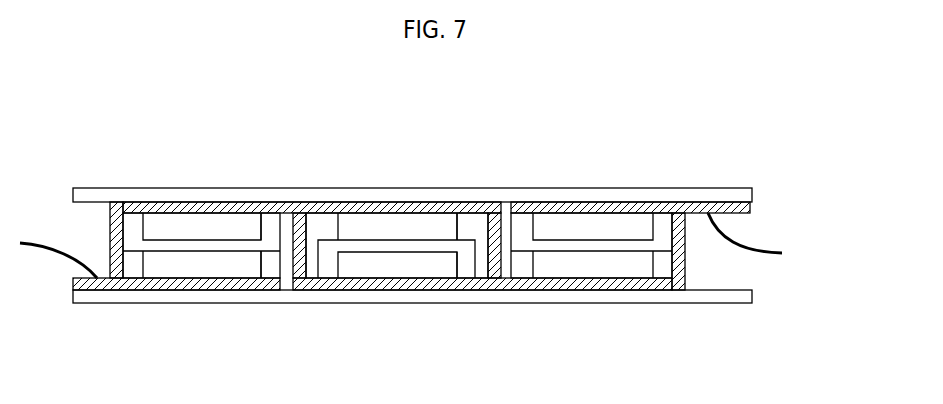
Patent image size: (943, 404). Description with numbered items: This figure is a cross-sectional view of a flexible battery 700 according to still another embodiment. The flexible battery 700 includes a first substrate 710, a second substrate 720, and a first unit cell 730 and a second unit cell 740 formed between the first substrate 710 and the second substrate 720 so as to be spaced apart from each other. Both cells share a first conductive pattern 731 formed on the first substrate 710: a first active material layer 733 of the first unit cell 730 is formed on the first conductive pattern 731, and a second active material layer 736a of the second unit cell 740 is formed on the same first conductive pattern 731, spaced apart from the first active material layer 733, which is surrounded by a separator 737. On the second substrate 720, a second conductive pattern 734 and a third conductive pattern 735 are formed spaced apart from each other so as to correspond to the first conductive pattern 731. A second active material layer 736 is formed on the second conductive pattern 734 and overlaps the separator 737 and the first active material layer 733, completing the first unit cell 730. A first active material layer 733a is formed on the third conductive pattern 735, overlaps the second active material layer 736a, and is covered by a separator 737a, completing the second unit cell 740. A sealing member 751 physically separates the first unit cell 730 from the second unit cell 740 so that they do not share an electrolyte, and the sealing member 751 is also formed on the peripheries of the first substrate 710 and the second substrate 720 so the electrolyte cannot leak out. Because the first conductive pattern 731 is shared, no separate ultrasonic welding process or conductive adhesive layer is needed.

The flexible battery 700 is at (766, 140).
The first substrate 710 is at (752, 194).
The second substrate 720 is at (752, 297).
The first unit cell 730 is at (209, 237).
The first conductive pattern 731 is at (132, 202).
The first active material layer 733 is at (168, 226).
The first active material layer 733a is at (402, 260).
The second conductive pattern 734 is at (106, 290).
The third conductive pattern 735 is at (300, 290).
The second active material layer 736 is at (225, 263).
The second active material layer 736a is at (358, 226).
The separator 737 is at (250, 248).
The separator 737a is at (467, 243).
The second unit cell 740 is at (401, 237).
The sealing member 751 is at (110, 226).